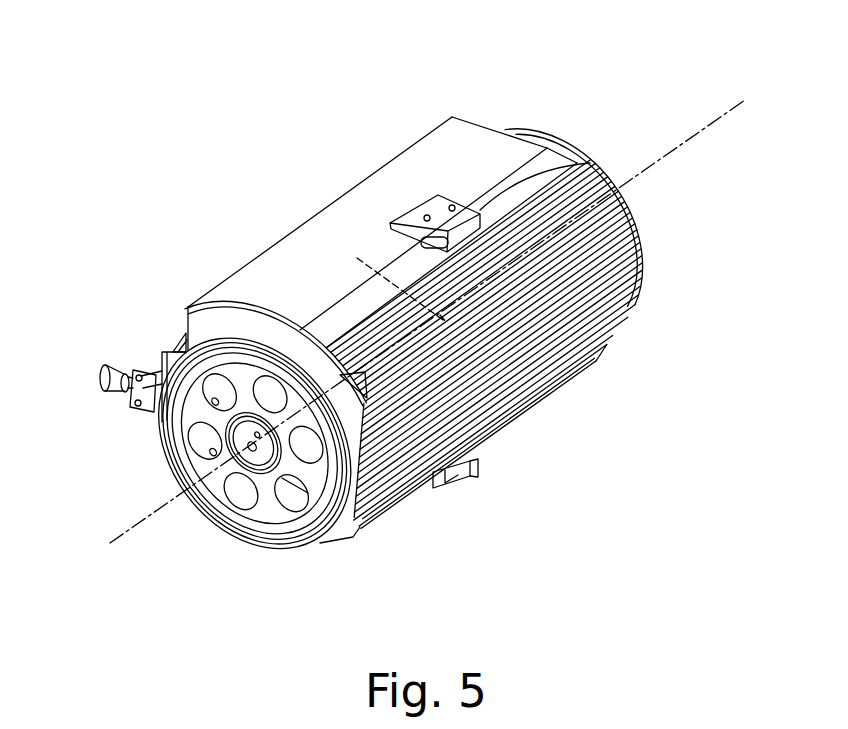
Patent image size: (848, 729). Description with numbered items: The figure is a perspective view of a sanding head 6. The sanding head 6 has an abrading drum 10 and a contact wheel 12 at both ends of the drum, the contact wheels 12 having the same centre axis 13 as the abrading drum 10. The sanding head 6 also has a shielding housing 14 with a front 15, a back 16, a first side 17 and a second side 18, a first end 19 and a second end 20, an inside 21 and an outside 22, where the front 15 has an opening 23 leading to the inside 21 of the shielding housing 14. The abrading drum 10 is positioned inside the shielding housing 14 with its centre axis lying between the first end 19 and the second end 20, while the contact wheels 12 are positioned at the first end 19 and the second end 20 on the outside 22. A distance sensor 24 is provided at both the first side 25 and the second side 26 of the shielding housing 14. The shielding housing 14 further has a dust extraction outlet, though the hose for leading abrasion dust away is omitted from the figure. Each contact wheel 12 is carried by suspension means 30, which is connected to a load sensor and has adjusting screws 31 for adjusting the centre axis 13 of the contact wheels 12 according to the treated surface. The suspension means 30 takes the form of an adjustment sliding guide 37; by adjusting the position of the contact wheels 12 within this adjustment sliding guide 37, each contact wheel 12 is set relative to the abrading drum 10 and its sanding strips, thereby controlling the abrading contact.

The sanding head 6 is at (279, 153).
The abrading drum 10 is at (590, 284).
The contact wheel 12 is at (631, 231).
The centre axis 13 is at (745, 100).
The shielding housing 14 is at (437, 141).
The front 15 is at (583, 421).
The back 16 is at (236, 240).
The first side 17 is at (252, 290).
The second side 18 is at (314, 553).
The first end 19 is at (205, 332).
The second end 20 is at (505, 125).
The inside 21 is at (395, 496).
The outside 22 is at (320, 233).
The opening 23 is at (443, 533).
The distance sensor 24 is at (480, 216).
The first side 25 is at (462, 140).
The second side 26 is at (603, 364).
The suspension means 30 is at (162, 352).
The adjusting screws 31 is at (100, 378).
The adjustment sliding guide 37 is at (211, 450).